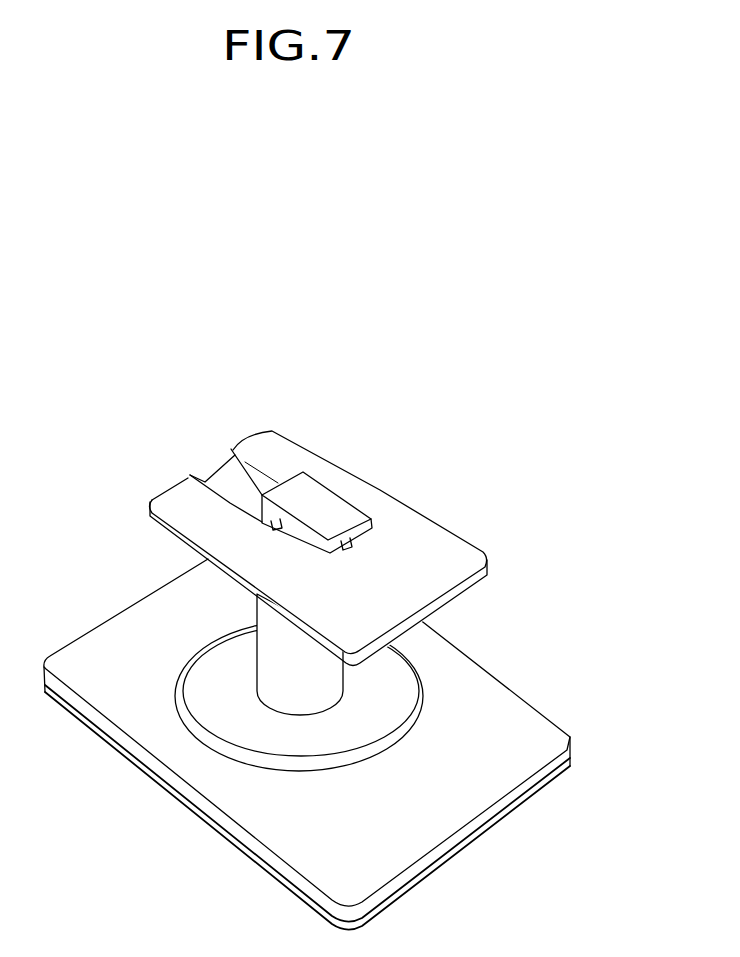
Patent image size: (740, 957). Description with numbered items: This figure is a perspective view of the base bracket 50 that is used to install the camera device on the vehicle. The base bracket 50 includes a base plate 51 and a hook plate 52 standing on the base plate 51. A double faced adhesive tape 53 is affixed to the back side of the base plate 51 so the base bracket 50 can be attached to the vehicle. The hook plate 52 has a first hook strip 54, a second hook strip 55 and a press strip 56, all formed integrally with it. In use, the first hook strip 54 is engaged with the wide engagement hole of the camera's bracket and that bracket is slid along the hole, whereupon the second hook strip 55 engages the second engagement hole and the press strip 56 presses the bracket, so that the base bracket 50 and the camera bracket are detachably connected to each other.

The base bracket 50 is at (329, 646).
The base plate 51 is at (477, 688).
The hook plate 52 is at (453, 558).
The double faced adhesive tape 53 is at (190, 803).
The first hook strip 54 is at (325, 500).
The second hook strip 55 is at (353, 541).
The press strip 56 is at (228, 477).